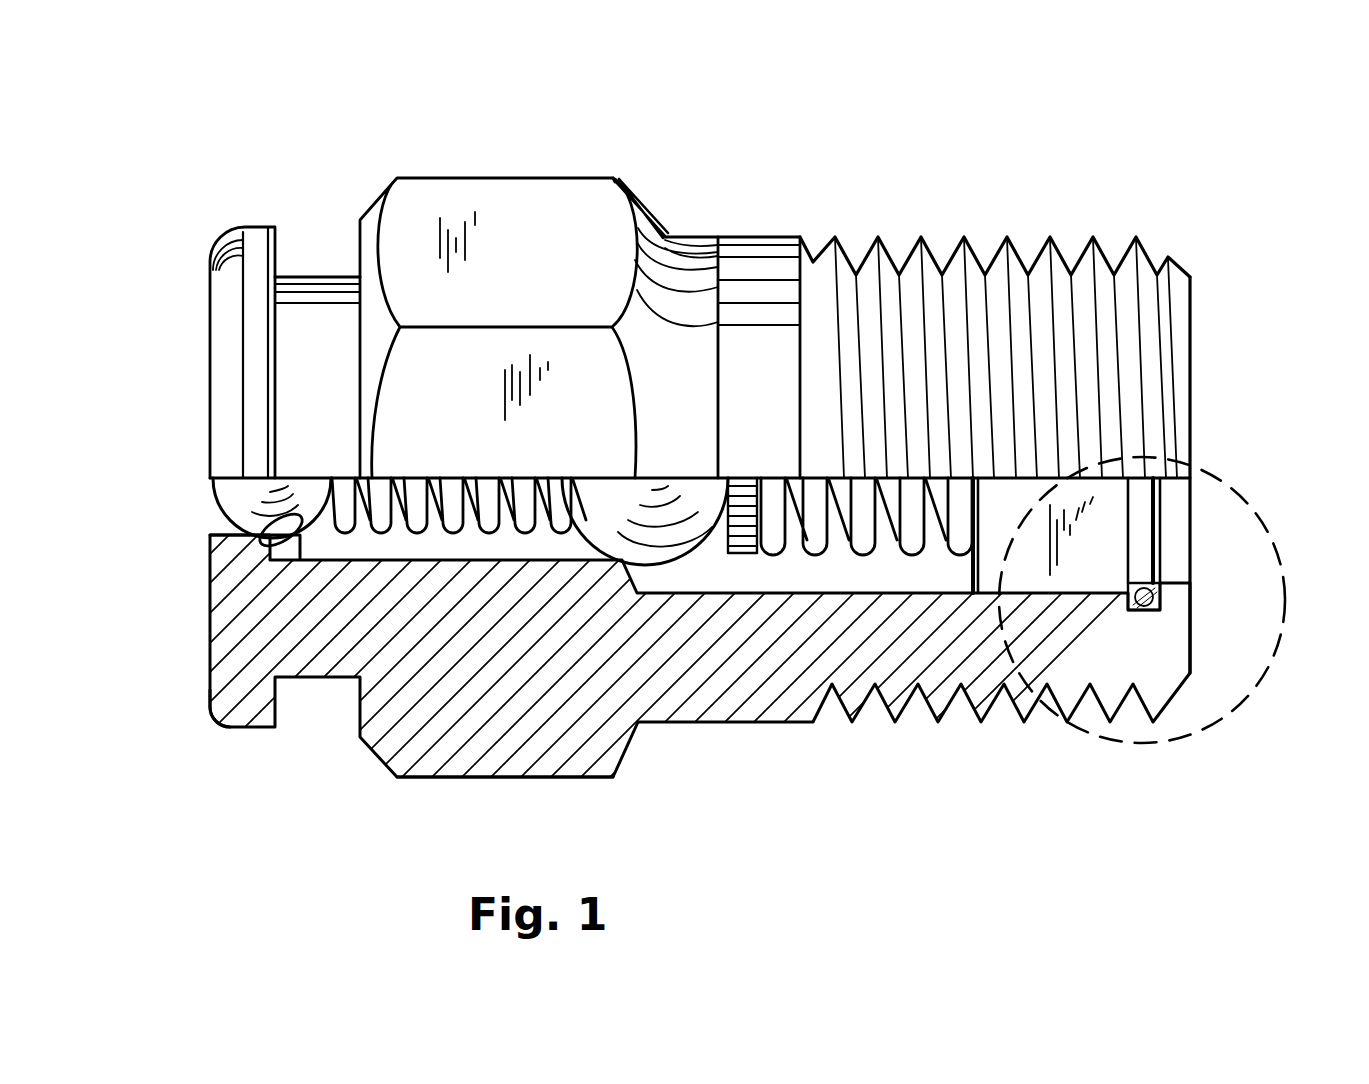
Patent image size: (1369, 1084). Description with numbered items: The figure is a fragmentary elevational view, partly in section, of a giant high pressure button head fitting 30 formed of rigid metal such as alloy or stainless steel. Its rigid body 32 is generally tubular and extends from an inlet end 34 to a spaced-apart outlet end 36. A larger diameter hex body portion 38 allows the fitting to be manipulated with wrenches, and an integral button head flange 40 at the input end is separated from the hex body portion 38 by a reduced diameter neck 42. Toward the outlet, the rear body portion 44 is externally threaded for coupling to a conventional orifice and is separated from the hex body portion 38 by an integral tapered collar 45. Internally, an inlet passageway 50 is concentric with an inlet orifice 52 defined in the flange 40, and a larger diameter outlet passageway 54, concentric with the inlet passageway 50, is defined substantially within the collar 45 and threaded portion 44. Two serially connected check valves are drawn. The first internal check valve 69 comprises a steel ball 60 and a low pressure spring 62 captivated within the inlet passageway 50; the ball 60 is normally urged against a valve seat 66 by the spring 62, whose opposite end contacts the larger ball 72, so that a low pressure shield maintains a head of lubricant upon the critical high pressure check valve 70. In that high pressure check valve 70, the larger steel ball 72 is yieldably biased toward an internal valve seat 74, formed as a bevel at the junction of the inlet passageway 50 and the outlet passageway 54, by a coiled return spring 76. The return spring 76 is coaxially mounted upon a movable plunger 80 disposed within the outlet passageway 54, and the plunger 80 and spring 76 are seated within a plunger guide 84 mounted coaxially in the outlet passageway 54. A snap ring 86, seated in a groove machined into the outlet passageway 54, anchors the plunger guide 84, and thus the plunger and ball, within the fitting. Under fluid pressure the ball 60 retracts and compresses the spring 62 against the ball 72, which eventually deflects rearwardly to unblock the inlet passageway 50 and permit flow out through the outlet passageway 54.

The button head fitting 30 is at (704, 157).
The rigid body 32 is at (569, 203).
The inlet end 34 is at (183, 308).
The outlet end 36 is at (1222, 330).
The hex body portion 38 is at (427, 198).
The button head flange 40 is at (263, 230).
The neck 42 is at (313, 276).
The rear body portion 44 is at (963, 250).
The tapered collar 45 is at (661, 237).
The inlet passageway 50 is at (393, 548).
The inlet orifice 52 is at (221, 520).
The outlet passageway 54 is at (857, 585).
The steel ball 60 is at (241, 500).
The low pressure spring 62 is at (452, 500).
The valve seat 66 is at (212, 708).
The first internal check valve 69 is at (297, 565).
The high pressure check valve 70 is at (732, 573).
The steel ball 72 is at (615, 506).
The valve seat 74 is at (633, 583).
The return spring 76 is at (813, 555).
The plunger 80 is at (836, 505).
The plunger guide 84 is at (1050, 573).
The snap ring 86 is at (1158, 596).